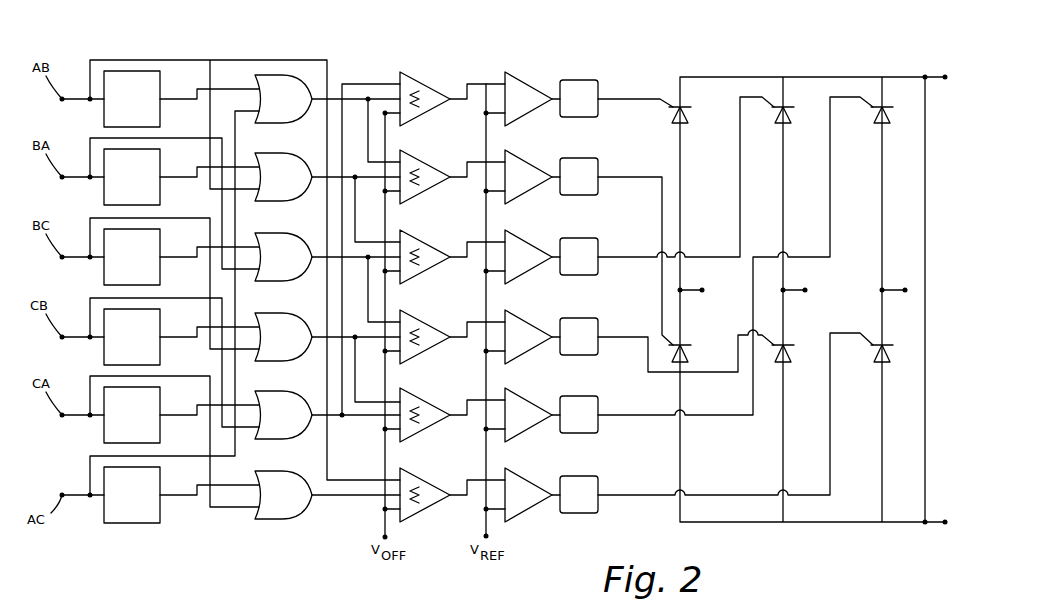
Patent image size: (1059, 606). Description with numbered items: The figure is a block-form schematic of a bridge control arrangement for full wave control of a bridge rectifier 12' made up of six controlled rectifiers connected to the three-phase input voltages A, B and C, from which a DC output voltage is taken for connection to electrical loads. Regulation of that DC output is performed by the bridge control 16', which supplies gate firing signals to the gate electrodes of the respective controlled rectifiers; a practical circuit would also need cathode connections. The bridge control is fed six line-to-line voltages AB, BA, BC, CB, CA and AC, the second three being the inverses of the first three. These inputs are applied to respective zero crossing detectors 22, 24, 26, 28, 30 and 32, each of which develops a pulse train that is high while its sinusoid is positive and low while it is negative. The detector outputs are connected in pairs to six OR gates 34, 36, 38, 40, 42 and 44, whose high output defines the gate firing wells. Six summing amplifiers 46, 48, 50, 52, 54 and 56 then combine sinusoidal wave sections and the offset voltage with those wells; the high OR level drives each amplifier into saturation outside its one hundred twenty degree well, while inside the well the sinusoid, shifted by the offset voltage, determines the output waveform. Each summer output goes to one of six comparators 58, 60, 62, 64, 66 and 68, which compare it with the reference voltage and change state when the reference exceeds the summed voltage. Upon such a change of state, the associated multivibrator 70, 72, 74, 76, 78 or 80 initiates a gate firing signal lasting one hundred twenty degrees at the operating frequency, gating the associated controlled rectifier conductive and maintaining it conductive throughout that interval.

The bridge rectifier 12' is at (808, 269).
The bridge control 16' is at (364, 44).
The zero crossing detector 22 is at (160, 80).
The zero crossing detector 24 is at (160, 175).
The zero crossing detector 26 is at (160, 252).
The zero crossing detector 28 is at (172, 324).
The zero crossing detector 30 is at (160, 422).
The zero crossing detector 32 is at (160, 477).
The OR gate 34 is at (289, 80).
The OR gate 36 is at (289, 158).
The OR gate 38 is at (289, 238).
The OR gate 40 is at (289, 318).
The OR gate 42 is at (291, 396).
The OR gate 44 is at (298, 478).
The summing amplifier 46 is at (430, 84).
The summing amplifier 48 is at (430, 162).
The summing amplifier 50 is at (430, 242).
The summing amplifier 52 is at (430, 322).
The summing amplifier 54 is at (430, 400).
The summing amplifier 56 is at (430, 480).
The comparator 58 is at (525, 85).
The comparator 60 is at (528, 163).
The comparator 62 is at (528, 243).
The comparator 64 is at (528, 323).
The comparator 66 is at (528, 401).
The comparator 68 is at (528, 481).
The multivibrator 70 is at (598, 84).
The multivibrator 72 is at (598, 162).
The multivibrator 74 is at (598, 242).
The multivibrator 76 is at (598, 322).
The multivibrator 78 is at (598, 400).
The multivibrator 80 is at (598, 480).